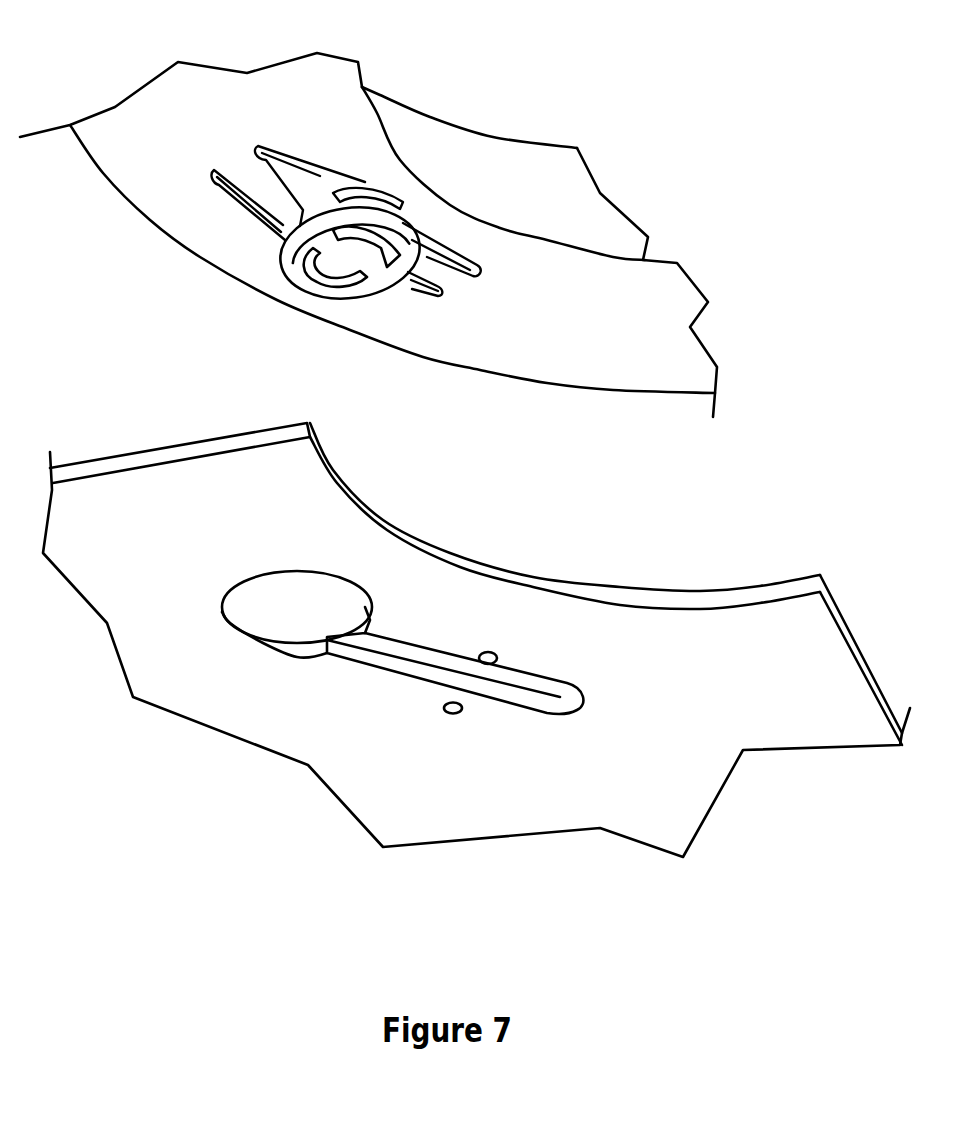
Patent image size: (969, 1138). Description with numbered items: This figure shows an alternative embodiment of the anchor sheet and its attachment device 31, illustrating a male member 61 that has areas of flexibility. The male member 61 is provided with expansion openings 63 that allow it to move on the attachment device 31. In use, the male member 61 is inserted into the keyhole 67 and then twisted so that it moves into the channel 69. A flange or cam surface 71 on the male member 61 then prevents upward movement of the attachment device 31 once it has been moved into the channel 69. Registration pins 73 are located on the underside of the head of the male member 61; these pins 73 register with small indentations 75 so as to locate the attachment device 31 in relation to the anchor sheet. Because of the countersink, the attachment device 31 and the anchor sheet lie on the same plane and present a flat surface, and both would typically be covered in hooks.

The attachment device 31 is at (518, 187).
The male member 61 is at (328, 230).
The expansion opening 63 is at (257, 197).
The registration pin 73 is at (404, 232).
The flange or cam surface 71 is at (430, 297).
The keyhole 67 is at (267, 617).
The channel 69 is at (520, 683).
The small indentations 75 is at (455, 715).